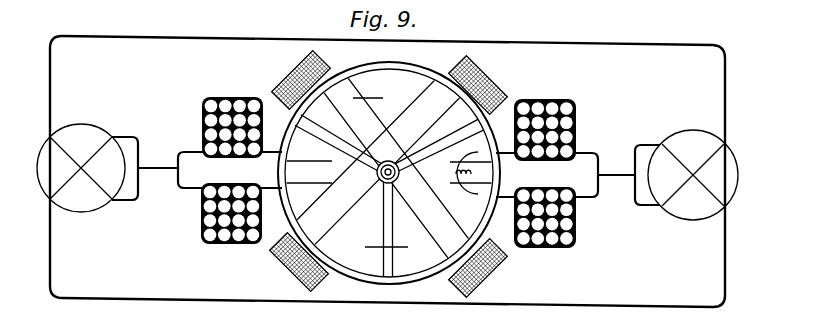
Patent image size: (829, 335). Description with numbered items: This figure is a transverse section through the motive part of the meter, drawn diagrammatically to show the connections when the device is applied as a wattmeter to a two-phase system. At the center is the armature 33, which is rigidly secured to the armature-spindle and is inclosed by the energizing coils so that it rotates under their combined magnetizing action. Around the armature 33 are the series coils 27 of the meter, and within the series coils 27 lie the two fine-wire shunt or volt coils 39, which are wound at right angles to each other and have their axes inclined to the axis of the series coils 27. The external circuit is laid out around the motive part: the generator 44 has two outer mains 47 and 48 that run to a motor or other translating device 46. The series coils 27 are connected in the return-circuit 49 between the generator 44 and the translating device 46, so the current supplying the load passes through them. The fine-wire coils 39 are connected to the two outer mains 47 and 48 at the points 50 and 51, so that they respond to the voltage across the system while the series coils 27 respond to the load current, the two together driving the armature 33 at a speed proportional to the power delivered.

The outer main 47 is at (213, 39).
The outer main 48 is at (160, 297).
The connection point 50 is at (314, 47).
The shunt or volt coils 39 is at (495, 90).
The connection point 51 is at (298, 296).
The series coils 27 is at (568, 112).
The generator 44 is at (76, 136).
The translating device 46 is at (723, 163).
The return-circuit 49 is at (166, 173).
The armature 33 is at (428, 272).